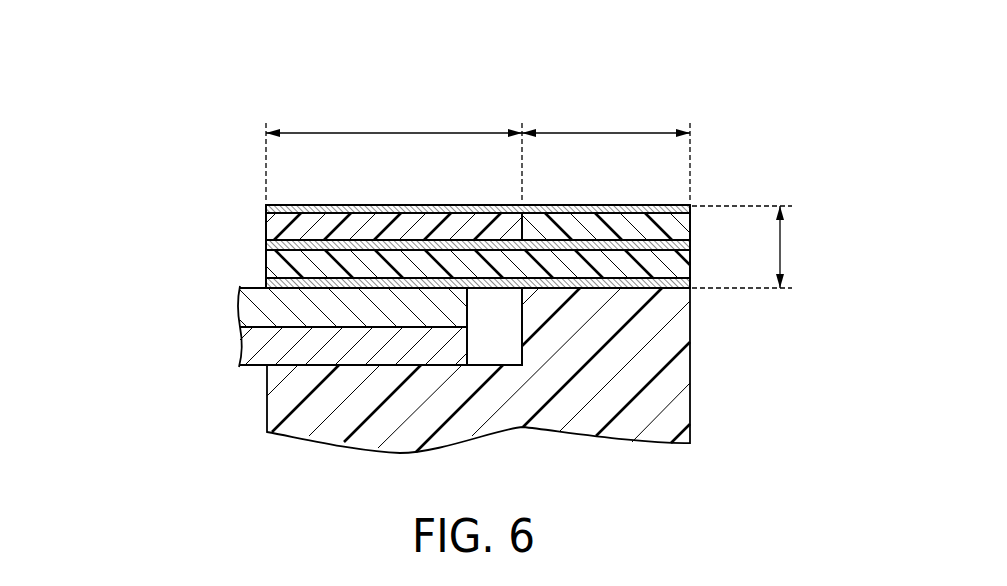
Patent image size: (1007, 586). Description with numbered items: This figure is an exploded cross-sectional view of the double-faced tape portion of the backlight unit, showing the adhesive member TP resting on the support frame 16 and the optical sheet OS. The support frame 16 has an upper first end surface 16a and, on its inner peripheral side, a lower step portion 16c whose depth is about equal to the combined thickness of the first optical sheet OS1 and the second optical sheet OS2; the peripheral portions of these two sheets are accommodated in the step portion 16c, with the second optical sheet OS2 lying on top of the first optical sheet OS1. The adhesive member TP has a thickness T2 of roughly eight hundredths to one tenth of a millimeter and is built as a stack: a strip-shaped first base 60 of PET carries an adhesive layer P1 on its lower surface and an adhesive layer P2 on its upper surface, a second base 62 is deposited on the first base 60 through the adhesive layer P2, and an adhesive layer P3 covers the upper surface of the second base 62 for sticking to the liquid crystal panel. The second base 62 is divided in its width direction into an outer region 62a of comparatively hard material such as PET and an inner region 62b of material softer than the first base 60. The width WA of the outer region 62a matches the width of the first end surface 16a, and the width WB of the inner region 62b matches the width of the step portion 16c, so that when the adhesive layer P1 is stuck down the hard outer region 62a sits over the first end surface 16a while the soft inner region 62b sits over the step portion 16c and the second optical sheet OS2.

The support frame 16 is at (683, 371).
The first end surface 16a is at (598, 290).
The step portion 16c is at (494, 354).
The first base 60 is at (683, 262).
The second base 62 is at (478, 218).
The outer region 62a is at (635, 226).
The inner region 62b is at (357, 218).
The adhesive layer P1 is at (266, 282).
The adhesive layer P2 is at (266, 246).
The adhesive layer P3 is at (266, 210).
The optical sheet OS is at (275, 322).
The first optical sheet OS1 is at (252, 343).
The second optical sheet OS2 is at (252, 307).
The adhesive member TP is at (454, 197).
The width of outer region WA is at (606, 152).
The width of inner region WB is at (394, 152).
The thickness of adhesive member T2 is at (751, 247).